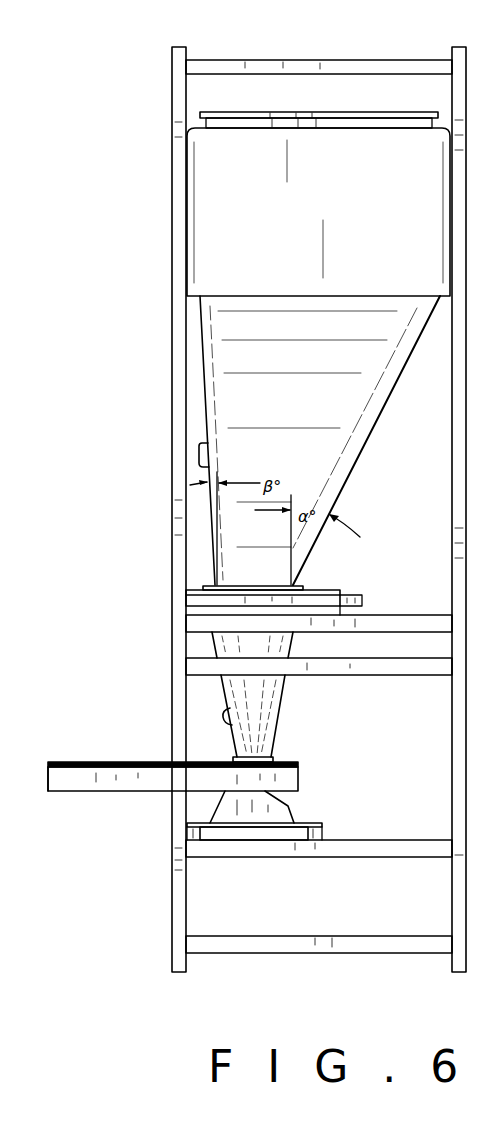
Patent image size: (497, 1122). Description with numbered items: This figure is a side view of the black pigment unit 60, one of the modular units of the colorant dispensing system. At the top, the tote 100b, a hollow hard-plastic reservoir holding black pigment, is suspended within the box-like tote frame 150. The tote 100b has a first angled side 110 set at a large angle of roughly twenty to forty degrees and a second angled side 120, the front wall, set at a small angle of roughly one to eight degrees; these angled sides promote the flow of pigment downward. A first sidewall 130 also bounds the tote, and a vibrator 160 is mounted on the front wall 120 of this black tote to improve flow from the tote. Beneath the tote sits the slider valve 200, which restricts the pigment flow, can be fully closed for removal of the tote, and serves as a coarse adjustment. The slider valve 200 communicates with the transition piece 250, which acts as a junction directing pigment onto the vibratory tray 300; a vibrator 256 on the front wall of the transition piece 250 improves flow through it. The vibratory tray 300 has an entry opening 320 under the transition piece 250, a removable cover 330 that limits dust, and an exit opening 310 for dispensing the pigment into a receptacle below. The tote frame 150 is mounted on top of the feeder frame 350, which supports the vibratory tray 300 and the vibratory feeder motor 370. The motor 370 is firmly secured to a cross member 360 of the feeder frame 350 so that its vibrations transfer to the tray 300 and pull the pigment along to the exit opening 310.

The black pigment unit 60 is at (140, 93).
The tote frame 150 is at (172, 238).
The tote 100b is at (250, 358).
The second angled side 120 is at (205, 400).
The first angled side 110 is at (370, 433).
The first sidewall 130 is at (310, 480).
The vibrator 160 is at (197, 455).
The slider valve 200 is at (203, 598).
The transition piece 250 is at (237, 687).
The vibrator 256 is at (225, 717).
The removable cover 330 is at (125, 760).
The entry opening 320 is at (285, 778).
The vibratory tray 300 is at (112, 779).
The exit opening 310 is at (48, 778).
The vibratory feeder motor 370 is at (242, 807).
The feeder frame 350 is at (172, 918).
The cross member 360 is at (393, 850).